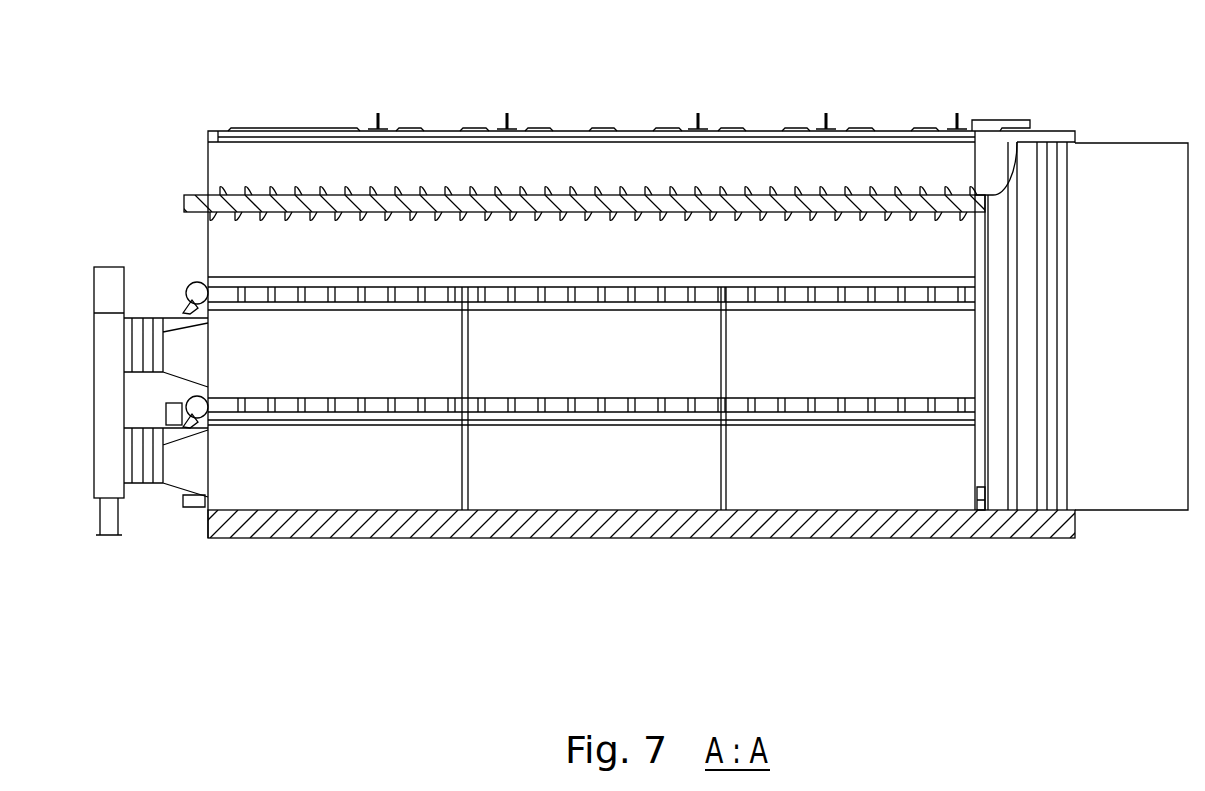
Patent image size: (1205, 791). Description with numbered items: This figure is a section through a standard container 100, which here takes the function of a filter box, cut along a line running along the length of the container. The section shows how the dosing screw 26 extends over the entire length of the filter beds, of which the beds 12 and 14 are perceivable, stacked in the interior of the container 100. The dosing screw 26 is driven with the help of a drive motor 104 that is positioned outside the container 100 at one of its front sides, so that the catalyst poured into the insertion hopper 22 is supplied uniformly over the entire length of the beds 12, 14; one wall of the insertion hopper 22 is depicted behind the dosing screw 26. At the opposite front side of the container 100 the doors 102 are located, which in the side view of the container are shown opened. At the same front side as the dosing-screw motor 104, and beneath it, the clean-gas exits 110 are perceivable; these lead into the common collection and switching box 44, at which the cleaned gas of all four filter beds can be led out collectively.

The standard container 100 is at (874, 87).
The doors 102 is at (1145, 160).
The drive motor 104 is at (195, 200).
The clean-gas exits 110 is at (183, 348).
The collection and switching box 44 is at (110, 349).
The insertion hopper 22 is at (425, 240).
The dosing screw 26 is at (593, 210).
The bed 12 is at (885, 312).
The bed 14 is at (932, 443).